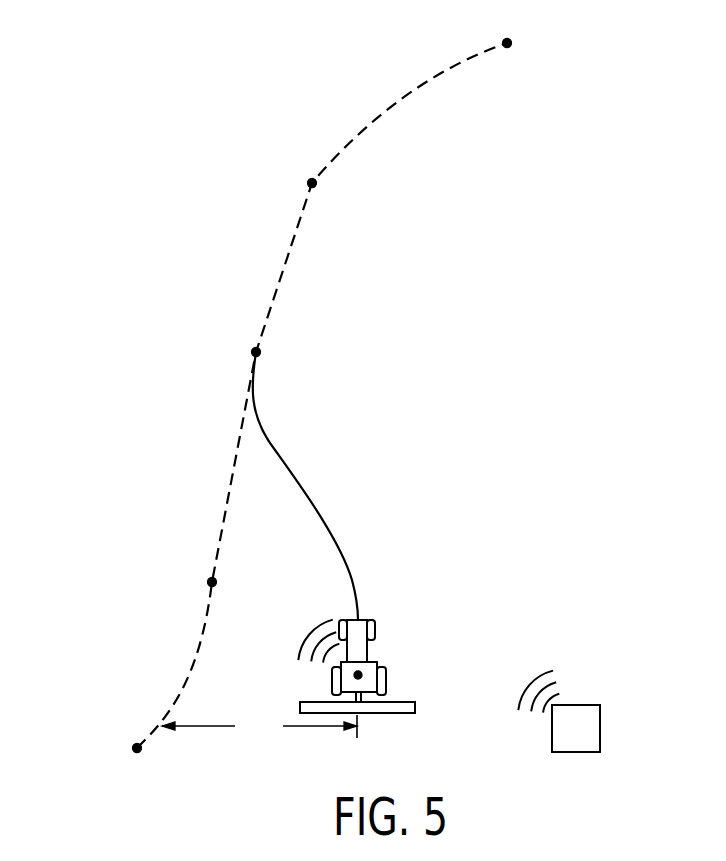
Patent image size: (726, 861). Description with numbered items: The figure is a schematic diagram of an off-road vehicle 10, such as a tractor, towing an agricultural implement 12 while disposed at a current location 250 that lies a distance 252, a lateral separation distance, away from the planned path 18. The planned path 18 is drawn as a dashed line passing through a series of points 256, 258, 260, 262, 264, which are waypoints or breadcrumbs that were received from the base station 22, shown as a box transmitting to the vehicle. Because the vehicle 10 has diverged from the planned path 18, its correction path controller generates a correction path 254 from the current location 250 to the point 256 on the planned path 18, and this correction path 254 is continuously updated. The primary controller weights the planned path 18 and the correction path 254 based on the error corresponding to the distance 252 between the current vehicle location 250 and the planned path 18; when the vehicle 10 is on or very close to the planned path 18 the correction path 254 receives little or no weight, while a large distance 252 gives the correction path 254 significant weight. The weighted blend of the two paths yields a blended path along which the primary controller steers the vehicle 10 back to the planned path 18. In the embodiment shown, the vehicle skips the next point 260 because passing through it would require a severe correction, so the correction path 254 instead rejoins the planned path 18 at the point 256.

The off-road vehicle 10 is at (370, 650).
The agricultural implement 12 is at (380, 713).
The planned path 18 is at (335, 153).
The base station 22 is at (577, 705).
The location 250 is at (358, 675).
The distance 252 is at (259, 729).
The correction path 254 is at (297, 488).
The point 256 is at (259, 349).
The point 258 is at (134, 745).
The next point 260 is at (208, 578).
The point 262 is at (315, 187).
The point 264 is at (503, 40).